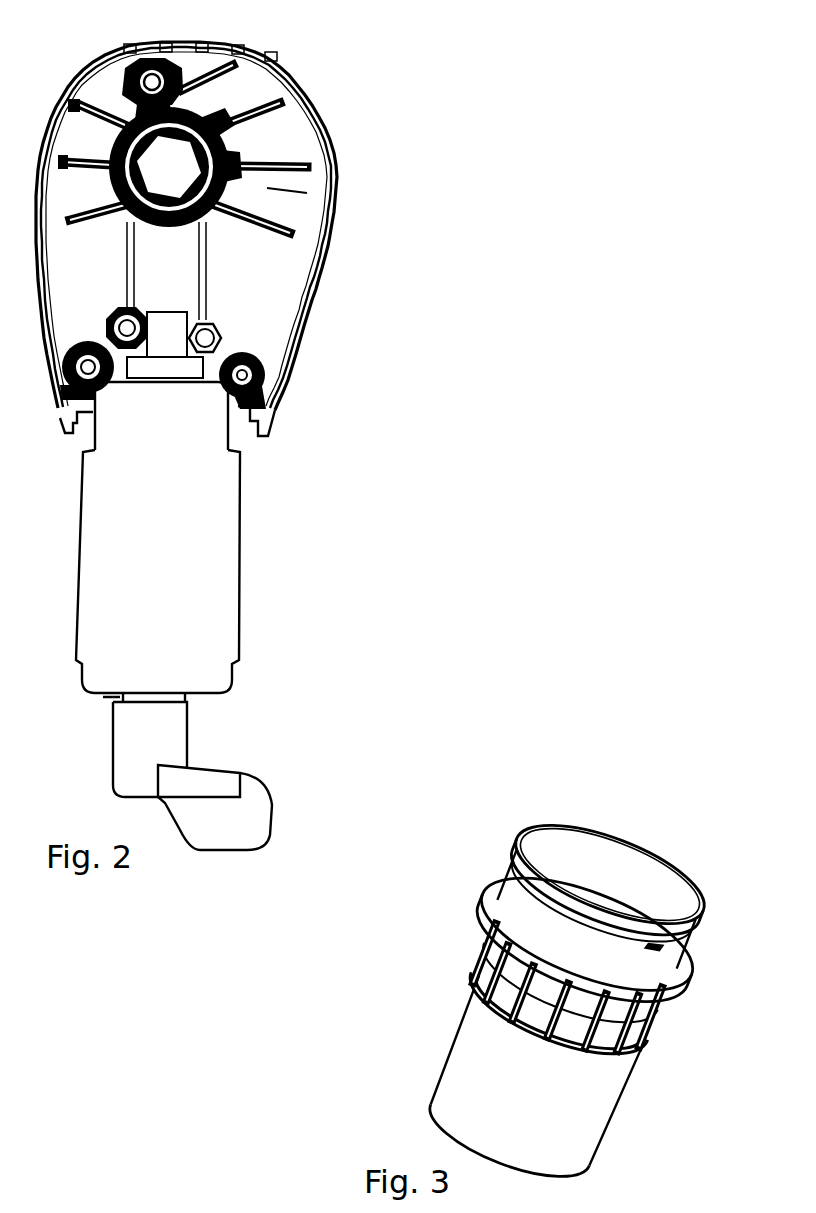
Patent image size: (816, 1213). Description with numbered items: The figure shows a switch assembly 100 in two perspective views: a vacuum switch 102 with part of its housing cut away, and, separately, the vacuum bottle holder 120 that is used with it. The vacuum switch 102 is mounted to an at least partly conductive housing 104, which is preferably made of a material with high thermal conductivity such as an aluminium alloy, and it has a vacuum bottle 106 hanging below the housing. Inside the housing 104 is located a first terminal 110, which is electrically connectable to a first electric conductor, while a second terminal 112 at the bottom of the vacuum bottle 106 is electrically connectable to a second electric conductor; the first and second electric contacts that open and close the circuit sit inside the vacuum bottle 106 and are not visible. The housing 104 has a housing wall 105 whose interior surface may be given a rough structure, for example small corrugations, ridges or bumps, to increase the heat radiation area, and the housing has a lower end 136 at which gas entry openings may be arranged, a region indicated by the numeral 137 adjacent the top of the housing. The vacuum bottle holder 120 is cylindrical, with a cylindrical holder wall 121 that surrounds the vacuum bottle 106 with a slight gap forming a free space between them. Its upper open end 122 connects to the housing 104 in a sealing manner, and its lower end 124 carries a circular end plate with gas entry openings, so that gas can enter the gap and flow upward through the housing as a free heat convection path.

In FIG. 2, the switch assembly 100 is at (358, 243).
In FIG. 2, the vacuum switch 102 is at (261, 463).
In FIG. 2, the housing 104 is at (352, 185).
In FIG. 2, the housing wall 105 is at (268, 285).
In FIG. 2, the vacuum bottle 106 is at (213, 536).
In FIG. 2, the first terminal 110 is at (160, 332).
In FIG. 2, the second terminal 112 is at (163, 703).
In FIG. 2, the lower end of the housing 136 is at (272, 413).
In FIG. 2, the housing rim 137 is at (282, 56).
In FIG. 3, the vacuum bottle holder 120 is at (655, 1071).
In FIG. 3, the cylindrical holder wall 121 is at (587, 1113).
In FIG. 3, the upper open end 122 is at (692, 864).
In FIG. 3, the lower end 124 is at (592, 1172).